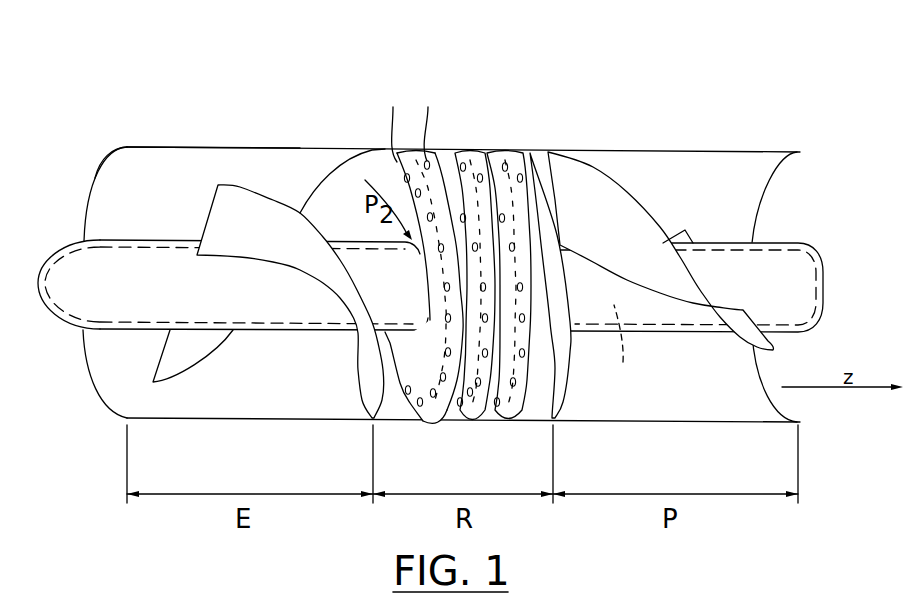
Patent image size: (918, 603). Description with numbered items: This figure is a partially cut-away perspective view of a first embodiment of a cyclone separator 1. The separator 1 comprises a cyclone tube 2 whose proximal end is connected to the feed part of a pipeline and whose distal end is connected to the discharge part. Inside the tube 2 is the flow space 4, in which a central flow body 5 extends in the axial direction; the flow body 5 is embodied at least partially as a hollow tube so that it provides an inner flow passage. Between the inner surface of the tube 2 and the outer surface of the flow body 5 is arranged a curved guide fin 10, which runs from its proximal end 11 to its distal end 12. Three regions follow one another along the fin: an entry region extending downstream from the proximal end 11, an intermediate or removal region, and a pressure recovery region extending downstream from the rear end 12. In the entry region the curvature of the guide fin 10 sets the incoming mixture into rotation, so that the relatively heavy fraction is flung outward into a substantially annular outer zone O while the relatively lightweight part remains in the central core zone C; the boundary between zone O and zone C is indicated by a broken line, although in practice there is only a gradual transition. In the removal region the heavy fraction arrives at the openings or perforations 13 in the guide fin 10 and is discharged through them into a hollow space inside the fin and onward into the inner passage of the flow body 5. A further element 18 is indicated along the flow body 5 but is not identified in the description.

The separator 1 is at (158, 58).
The cyclone tube 2 is at (667, 423).
The flow space 4 is at (183, 172).
The central flow body 5 is at (293, 331).
The curved guide fin 10 is at (340, 165).
The proximal end of the guide fin 11 is at (229, 188).
The distal end of the guide fin 12 is at (768, 348).
The openings or perforations 13 is at (530, 172).
The shaft core line 18 is at (628, 350).
The central zone or core zone C is at (396, 121).
The annular outer zone O is at (431, 120).